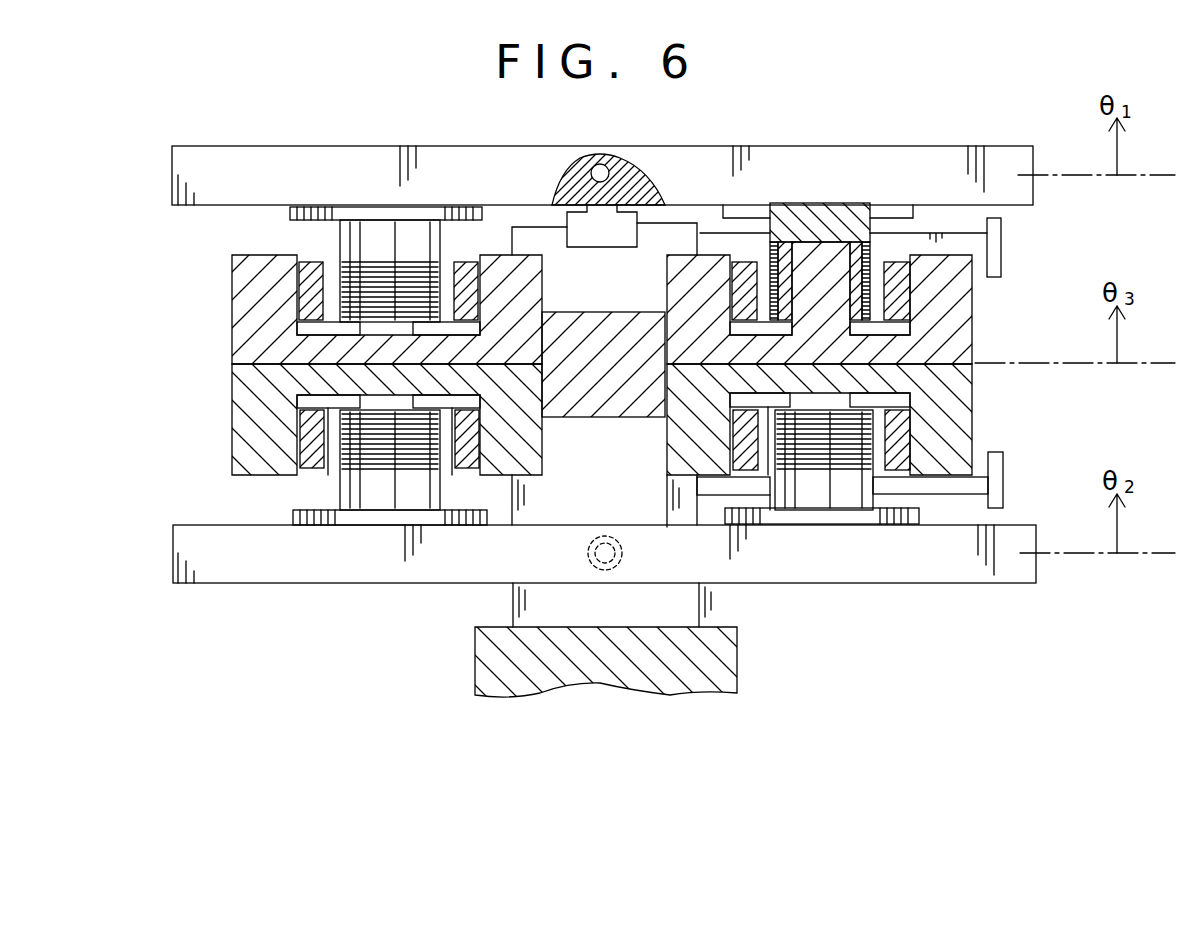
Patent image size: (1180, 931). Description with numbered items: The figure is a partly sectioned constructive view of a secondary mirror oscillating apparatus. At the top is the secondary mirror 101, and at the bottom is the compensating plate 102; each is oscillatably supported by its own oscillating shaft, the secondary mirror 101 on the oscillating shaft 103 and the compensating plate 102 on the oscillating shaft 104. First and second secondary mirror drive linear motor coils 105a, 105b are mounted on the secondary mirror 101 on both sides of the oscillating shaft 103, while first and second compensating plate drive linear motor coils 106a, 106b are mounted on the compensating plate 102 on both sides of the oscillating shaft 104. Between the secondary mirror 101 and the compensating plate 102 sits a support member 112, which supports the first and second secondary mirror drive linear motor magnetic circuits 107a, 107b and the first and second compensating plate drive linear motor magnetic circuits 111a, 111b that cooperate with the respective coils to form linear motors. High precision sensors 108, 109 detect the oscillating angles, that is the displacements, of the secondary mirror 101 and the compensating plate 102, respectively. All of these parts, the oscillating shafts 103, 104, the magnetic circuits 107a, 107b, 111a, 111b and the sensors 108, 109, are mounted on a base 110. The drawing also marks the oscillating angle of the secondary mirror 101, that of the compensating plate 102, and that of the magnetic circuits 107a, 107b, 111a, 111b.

The secondary mirror 101 is at (258, 166).
The compensating plate 102 is at (272, 573).
The oscillating shaft 103 is at (610, 171).
The oscillating shaft 104 is at (615, 553).
The first secondary mirror drive linear motor coil 105a is at (362, 258).
The second secondary mirror drive linear motor coil 105b is at (873, 255).
The first compensating plate drive linear motor coil 106a is at (352, 468).
The second compensating plate drive linear motor coil 106b is at (857, 467).
The first secondary mirror drive linear motor magnetic circuit 107a is at (240, 292).
The second secondary mirror drive linear motor magnetic circuit 107b is at (957, 337).
The high precision sensor 108 is at (1003, 246).
The high precision sensor 109 is at (1003, 488).
The base 110 is at (530, 522).
The first compensating plate drive linear motor magnetic circuit 111a is at (245, 387).
The second compensating plate drive linear motor magnetic circuit 111b is at (957, 403).
The support member 112 is at (628, 417).